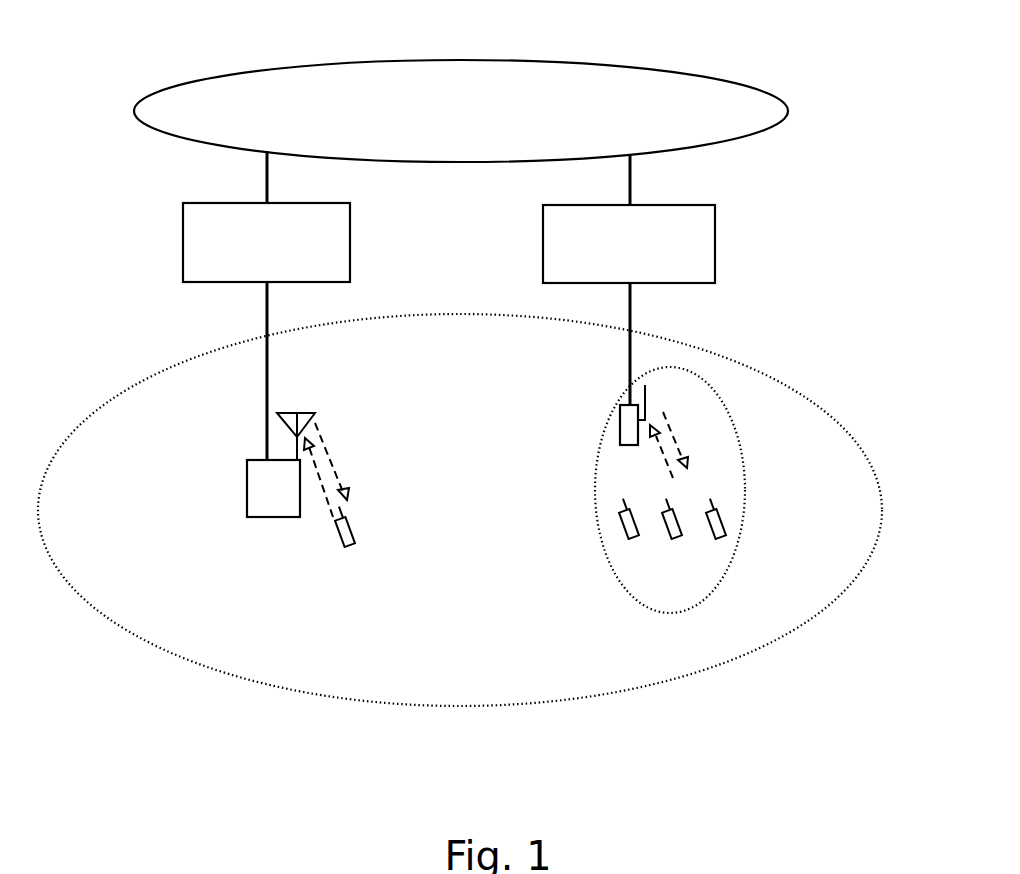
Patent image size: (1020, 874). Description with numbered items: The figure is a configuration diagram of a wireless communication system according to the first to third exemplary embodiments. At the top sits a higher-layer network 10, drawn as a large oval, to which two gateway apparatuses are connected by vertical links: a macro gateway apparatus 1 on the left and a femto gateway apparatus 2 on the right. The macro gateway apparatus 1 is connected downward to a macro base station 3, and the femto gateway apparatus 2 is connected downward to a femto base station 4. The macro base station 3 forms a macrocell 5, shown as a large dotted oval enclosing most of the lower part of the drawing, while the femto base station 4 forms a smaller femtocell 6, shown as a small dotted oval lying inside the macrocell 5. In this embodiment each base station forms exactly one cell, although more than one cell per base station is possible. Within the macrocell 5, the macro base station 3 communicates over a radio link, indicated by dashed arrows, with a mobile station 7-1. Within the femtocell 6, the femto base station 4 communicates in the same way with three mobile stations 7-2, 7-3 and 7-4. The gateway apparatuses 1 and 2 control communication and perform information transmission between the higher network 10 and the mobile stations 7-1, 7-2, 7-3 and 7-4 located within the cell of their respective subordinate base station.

The network 10 is at (565, 65).
The macro gateway apparatus 1 is at (350, 232).
The femto gateway apparatus 2 is at (715, 232).
The macro base station 3 is at (250, 460).
The femto base station 4 is at (620, 421).
The macrocell 5 is at (740, 365).
The femtocell 6 is at (737, 429).
The mobile station 7-1 is at (338, 547).
The mobile station 7-2 is at (618, 538).
The mobile station 7-3 is at (665, 538).
The mobile station 7-4 is at (708, 538).